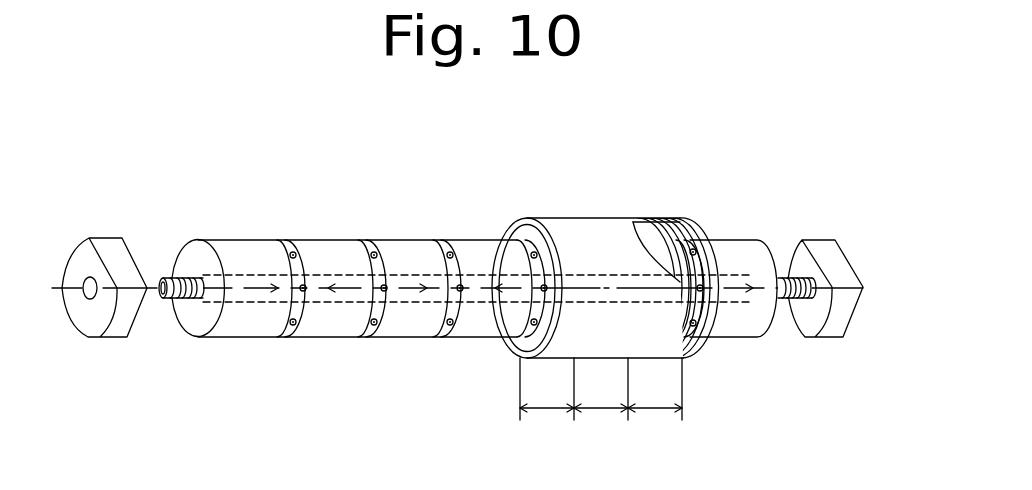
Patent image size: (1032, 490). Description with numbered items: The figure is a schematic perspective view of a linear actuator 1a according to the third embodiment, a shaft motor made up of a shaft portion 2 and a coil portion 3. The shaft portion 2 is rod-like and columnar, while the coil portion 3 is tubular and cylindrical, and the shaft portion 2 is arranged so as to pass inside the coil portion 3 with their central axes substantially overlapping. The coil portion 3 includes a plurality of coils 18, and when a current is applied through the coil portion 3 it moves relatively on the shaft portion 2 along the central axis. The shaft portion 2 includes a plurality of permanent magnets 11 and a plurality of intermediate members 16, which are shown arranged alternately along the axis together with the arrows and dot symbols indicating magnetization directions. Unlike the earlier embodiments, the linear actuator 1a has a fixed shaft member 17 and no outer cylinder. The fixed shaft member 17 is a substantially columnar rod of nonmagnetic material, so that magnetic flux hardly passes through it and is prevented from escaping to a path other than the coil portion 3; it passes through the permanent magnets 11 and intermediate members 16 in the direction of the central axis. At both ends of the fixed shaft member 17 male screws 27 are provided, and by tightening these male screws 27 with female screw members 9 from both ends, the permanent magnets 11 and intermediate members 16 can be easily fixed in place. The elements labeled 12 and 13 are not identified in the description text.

The linear actuator 1a is at (153, 177).
The shaft portion 2 is at (273, 378).
The coil portion 3 is at (690, 373).
The female screw member 9 is at (108, 240).
The permanent magnet 11 is at (220, 240).
The yoke 12 is at (367, 240).
The spacer 13 is at (384, 262).
The intermediate member 16 is at (368, 240).
The fixed shaft member 17 is at (213, 294).
The coil 18 is at (688, 225).
The male screw 27 is at (178, 303).